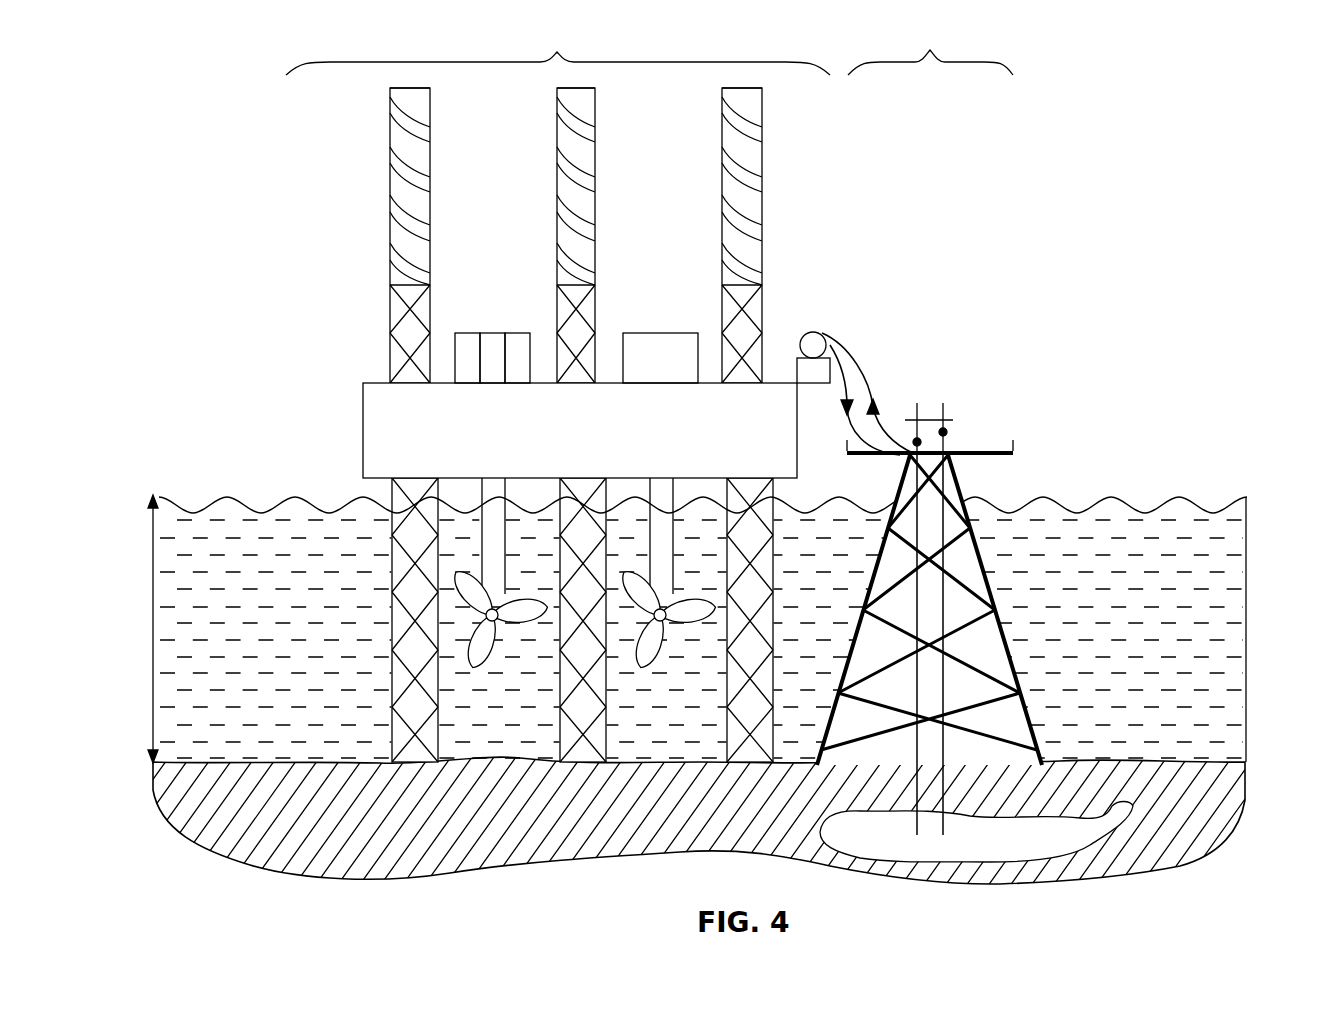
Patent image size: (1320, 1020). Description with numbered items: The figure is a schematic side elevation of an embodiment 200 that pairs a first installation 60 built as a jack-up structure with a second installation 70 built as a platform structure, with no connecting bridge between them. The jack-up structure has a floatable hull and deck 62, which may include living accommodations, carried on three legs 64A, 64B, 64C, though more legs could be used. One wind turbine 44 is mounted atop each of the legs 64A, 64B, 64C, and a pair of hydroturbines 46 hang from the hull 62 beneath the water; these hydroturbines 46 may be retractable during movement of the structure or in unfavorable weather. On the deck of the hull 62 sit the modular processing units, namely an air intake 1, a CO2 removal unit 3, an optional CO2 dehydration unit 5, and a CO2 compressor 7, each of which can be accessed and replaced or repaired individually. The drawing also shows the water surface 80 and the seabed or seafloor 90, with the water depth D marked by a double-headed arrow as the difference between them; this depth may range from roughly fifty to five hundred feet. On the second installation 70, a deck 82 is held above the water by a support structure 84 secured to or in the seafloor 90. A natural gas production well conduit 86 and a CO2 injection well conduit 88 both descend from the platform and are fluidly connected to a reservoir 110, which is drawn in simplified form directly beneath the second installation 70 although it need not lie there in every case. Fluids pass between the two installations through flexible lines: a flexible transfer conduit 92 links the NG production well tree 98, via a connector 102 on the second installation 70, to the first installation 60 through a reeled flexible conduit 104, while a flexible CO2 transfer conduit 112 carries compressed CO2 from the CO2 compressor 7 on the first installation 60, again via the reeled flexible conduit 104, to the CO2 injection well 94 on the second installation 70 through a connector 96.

The embodiment 200 is at (1232, 83).
The first installation 60 is at (558, 47).
The second installation 70 is at (930, 47).
The wind turbine 44 is at (391, 187).
The leg 64A is at (389, 310).
The leg 64B is at (556, 305).
The leg 64C is at (721, 305).
The air intake 1 is at (465, 333).
The CO2 removal unit 3 is at (492, 333).
The CO2 dehydration unit 5 is at (517, 333).
The CO2 compressor 7 is at (658, 333).
The reeled flexible conduit 104 is at (810, 331).
The floatable hull and deck 62 is at (362, 416).
The flexible CO2 transfer conduit 112 is at (840, 398).
The flexible transfer conduit 92 is at (856, 380).
The CO2 injection well 94 is at (915, 415).
The connector 96 is at (933, 440).
The NG production well tree 98 is at (946, 415).
The connector 102 is at (947, 432).
The deck 82 is at (1003, 441).
The support structure 84 is at (985, 560).
The natural gas production well conduit 86 is at (943, 672).
The CO2 injection well conduit 88 is at (923, 735).
The water surface 80 is at (1186, 496).
The seabed 90 is at (1220, 760).
The reservoir 110 is at (1108, 818).
The hydroturbine 46 is at (501, 623).
The water depth D is at (140, 629).